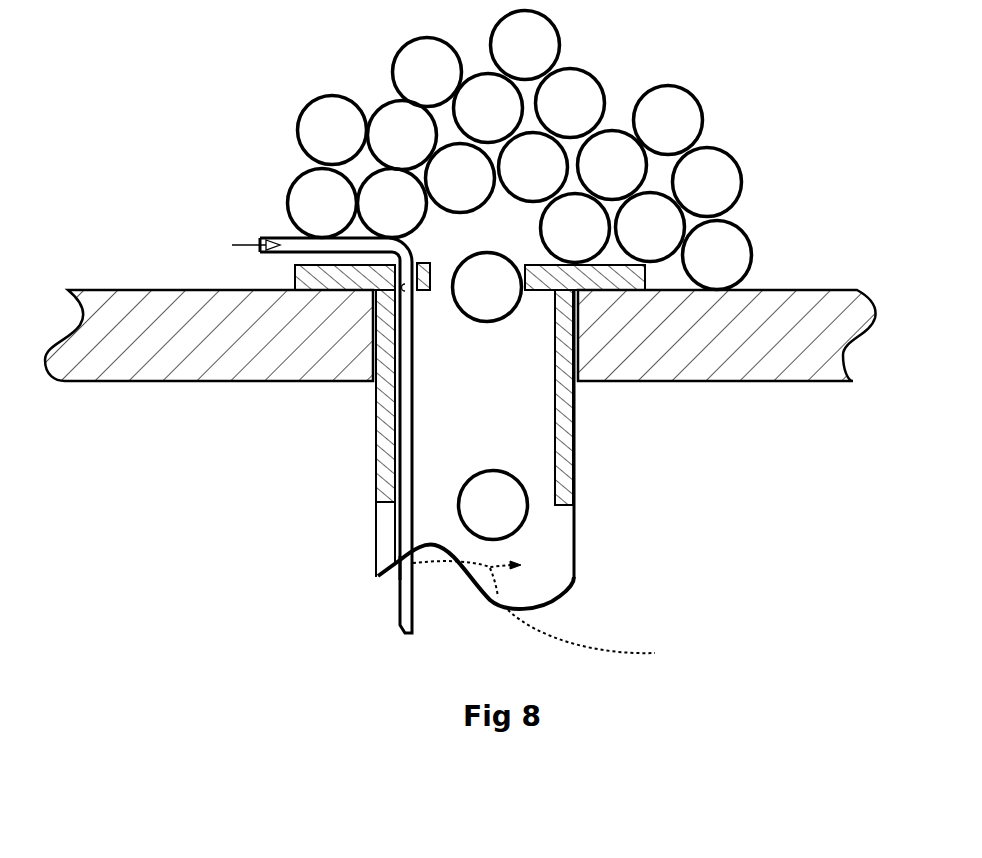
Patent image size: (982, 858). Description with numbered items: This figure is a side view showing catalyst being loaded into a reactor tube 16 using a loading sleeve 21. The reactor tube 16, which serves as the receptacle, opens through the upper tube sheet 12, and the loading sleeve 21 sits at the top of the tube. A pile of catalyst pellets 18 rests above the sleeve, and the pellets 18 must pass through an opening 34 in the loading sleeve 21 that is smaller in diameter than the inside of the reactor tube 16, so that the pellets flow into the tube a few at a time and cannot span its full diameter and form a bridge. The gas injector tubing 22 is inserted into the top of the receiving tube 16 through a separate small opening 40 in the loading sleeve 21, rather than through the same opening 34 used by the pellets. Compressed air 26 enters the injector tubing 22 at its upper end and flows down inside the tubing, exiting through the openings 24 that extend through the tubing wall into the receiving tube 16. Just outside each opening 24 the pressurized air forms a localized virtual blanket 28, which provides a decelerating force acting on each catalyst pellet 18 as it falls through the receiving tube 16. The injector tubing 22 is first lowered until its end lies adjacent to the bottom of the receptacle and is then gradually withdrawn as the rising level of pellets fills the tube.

The upper tube sheet 12 is at (228, 382).
The reactor tube 16 is at (575, 542).
The catalyst pellets 18 is at (597, 82).
The loading sleeve 21 is at (630, 275).
The gas injector tubing 22 is at (397, 596).
The openings 24 is at (417, 568).
The compressed air 26 is at (250, 242).
The virtual blankets 28 is at (556, 615).
The opening 34 is at (435, 288).
The small opening 40 is at (405, 288).